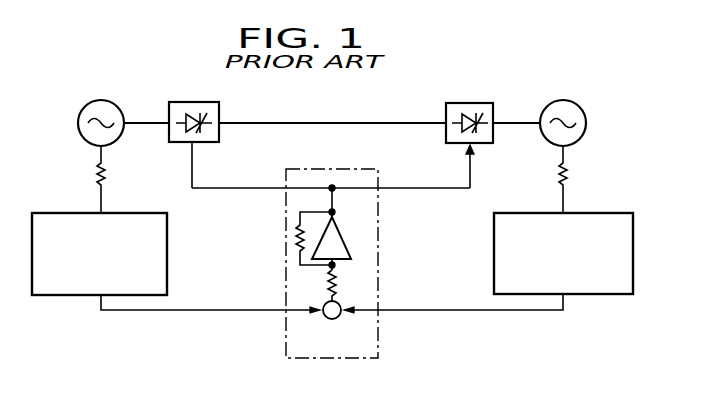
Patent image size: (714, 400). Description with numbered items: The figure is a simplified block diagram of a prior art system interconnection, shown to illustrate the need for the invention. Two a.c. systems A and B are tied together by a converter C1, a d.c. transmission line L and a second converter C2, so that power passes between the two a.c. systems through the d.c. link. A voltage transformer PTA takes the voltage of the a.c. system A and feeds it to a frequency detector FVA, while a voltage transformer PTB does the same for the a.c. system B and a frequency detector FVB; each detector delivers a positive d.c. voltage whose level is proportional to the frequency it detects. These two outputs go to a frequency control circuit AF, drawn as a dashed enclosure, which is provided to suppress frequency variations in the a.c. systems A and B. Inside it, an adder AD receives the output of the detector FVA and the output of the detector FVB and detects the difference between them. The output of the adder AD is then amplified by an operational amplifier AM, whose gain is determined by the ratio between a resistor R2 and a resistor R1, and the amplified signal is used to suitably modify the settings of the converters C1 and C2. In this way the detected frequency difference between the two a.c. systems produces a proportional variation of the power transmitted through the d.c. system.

The a.c. system A is at (101, 100).
The a.c. system B is at (575, 101).
The converter C1 is at (199, 101).
The converter C2 is at (473, 102).
The d.c. transmission line L is at (323, 123).
The voltage transformer PTA is at (97, 168).
The voltage transformer PTB is at (568, 172).
The frequency detector FVA is at (32, 276).
The frequency detector FVB is at (633, 277).
The frequency control circuit AF is at (286, 341).
The operational amplifier AM is at (344, 248).
The resistor R1 is at (338, 285).
The resistor R2 is at (295, 240).
The adder AD is at (330, 320).